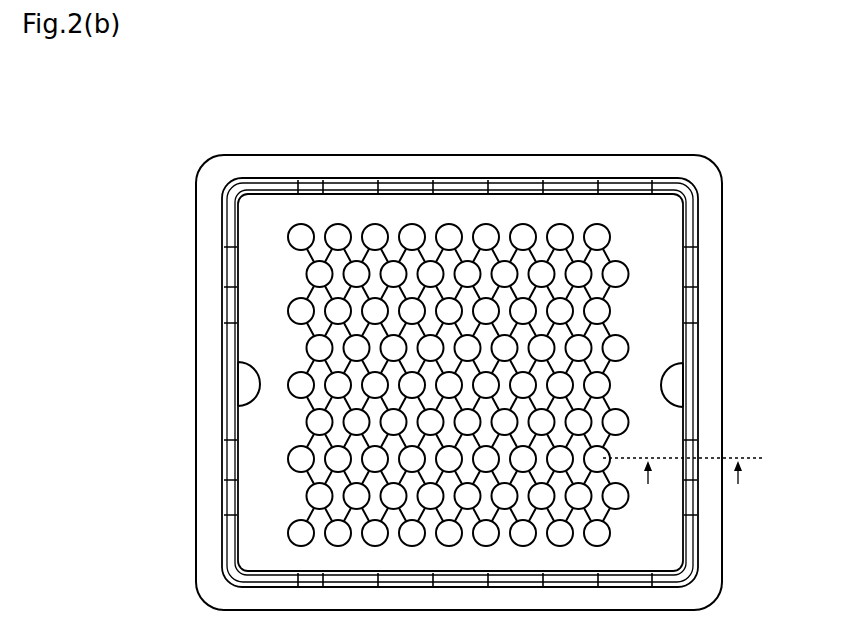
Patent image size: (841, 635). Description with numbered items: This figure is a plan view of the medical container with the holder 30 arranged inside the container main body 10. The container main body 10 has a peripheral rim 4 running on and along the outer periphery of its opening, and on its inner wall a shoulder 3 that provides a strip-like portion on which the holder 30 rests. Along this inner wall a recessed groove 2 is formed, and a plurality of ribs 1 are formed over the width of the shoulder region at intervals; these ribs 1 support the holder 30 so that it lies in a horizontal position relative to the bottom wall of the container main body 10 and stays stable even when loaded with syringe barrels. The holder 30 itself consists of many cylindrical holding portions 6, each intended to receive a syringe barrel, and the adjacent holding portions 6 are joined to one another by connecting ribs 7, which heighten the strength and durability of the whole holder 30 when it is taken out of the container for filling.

The rib 1 is at (323, 185).
The groove 2 is at (305, 185).
The shoulder 3 is at (232, 379).
The peripheral rim 4 is at (710, 258).
The holding portion 6 is at (520, 229).
The connecting rib 7 is at (610, 256).
The main body of container 10 is at (738, 322).
The holder 30 is at (573, 228).